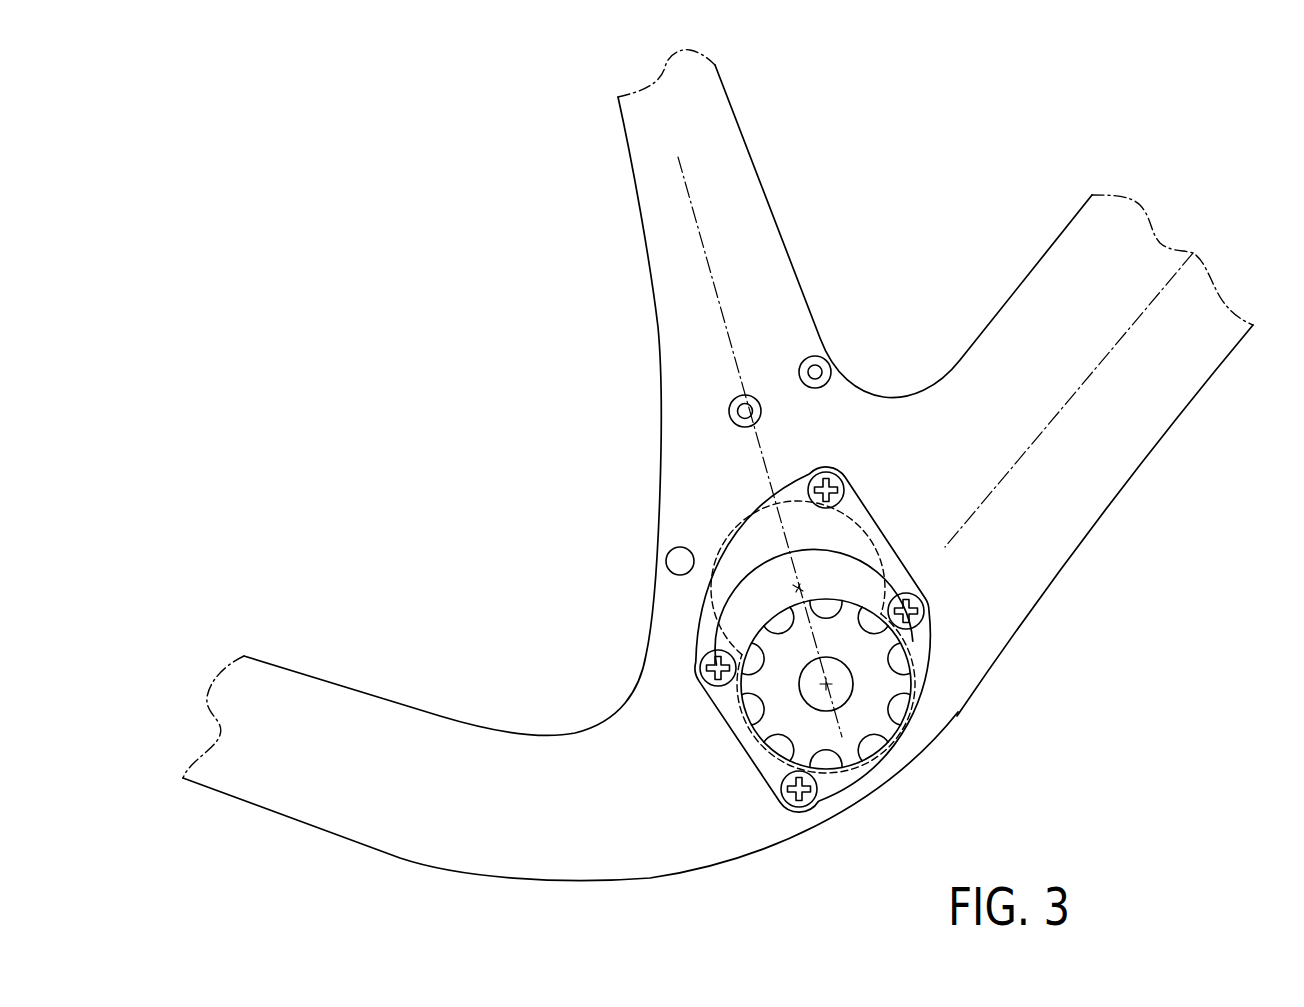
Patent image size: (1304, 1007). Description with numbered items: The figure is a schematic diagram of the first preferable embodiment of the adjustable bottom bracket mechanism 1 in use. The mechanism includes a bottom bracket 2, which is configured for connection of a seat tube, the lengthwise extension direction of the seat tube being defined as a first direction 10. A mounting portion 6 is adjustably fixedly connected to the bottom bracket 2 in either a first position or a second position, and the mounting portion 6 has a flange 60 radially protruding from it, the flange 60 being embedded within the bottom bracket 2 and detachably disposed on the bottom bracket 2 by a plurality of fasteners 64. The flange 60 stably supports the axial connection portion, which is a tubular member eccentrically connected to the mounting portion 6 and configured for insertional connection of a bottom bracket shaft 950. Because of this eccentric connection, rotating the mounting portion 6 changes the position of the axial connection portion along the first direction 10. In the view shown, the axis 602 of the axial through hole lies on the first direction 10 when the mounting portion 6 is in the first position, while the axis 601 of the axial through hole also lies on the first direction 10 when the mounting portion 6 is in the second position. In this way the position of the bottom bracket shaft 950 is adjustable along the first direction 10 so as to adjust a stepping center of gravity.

The adjustable bottom bracket mechanism 1 is at (487, 412).
The bottom bracket 2 is at (687, 642).
The first direction 10 is at (717, 290).
The mounting portion 6 is at (885, 500).
The flange 60 is at (918, 641).
The axis of the axial through hole (second position) 601 is at (797, 588).
The axis of the axial through hole (first position) 602 is at (826, 684).
The fasteners 64 is at (835, 469).
The bottom bracket shaft 950 is at (882, 702).